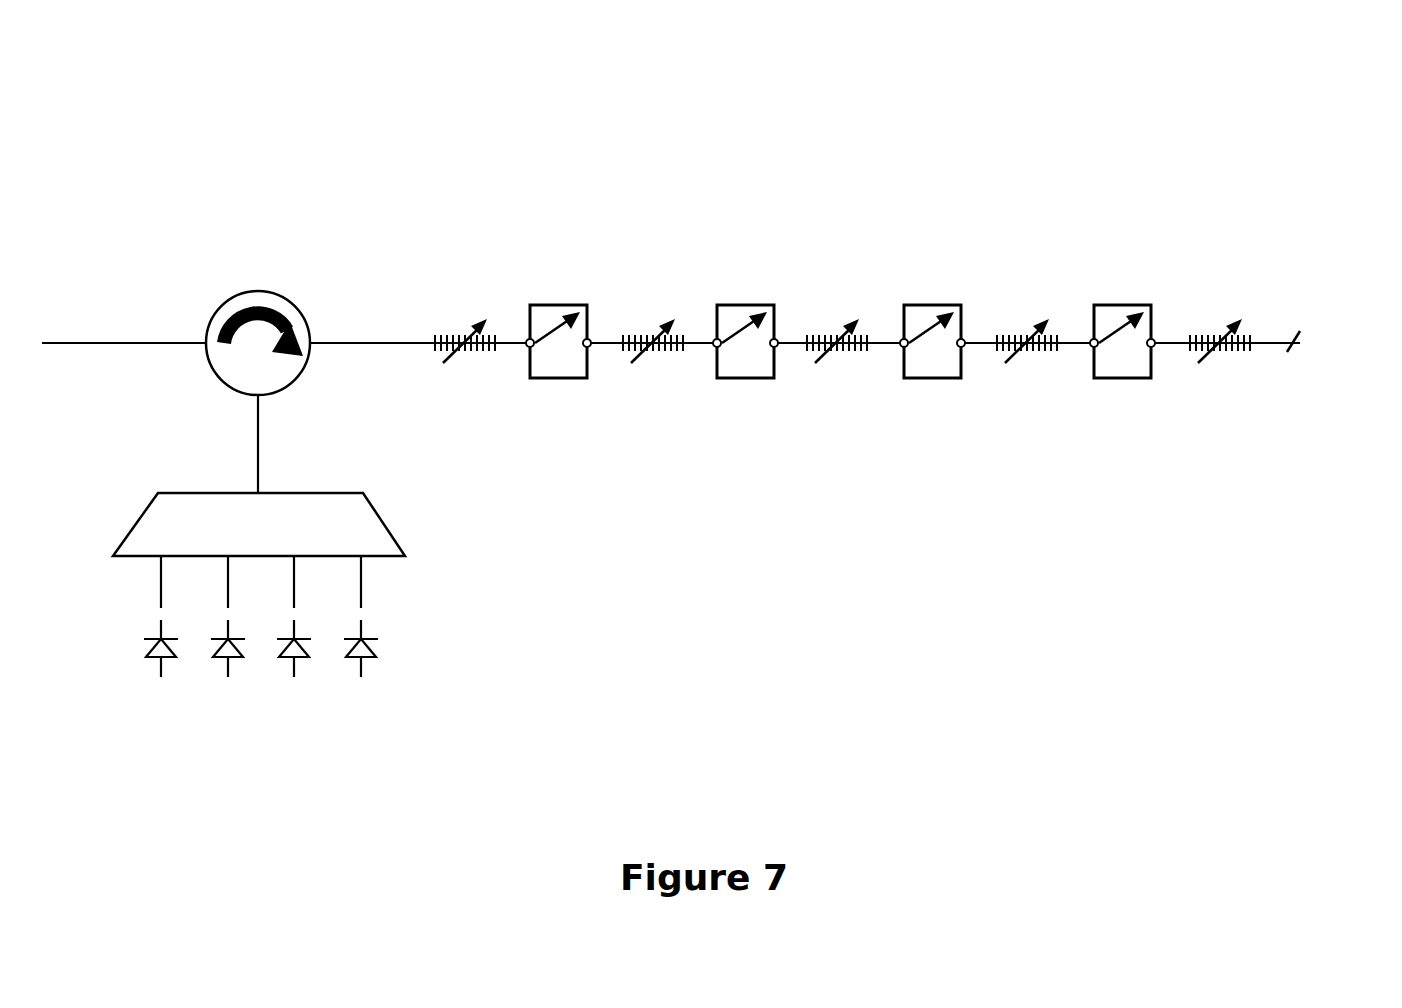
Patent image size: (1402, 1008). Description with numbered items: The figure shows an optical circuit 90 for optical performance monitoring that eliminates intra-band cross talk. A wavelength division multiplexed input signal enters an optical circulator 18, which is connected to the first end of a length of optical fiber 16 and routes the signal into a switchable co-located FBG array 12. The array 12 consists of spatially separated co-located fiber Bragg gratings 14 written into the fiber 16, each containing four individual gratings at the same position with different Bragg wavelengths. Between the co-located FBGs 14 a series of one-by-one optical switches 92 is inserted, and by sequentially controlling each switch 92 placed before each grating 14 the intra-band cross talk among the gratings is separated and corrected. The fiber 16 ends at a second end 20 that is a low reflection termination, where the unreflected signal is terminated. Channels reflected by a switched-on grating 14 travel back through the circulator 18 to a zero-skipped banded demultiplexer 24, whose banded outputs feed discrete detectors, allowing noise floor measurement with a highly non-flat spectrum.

The optical circuit 90 is at (947, 61).
The optical circulator 18 is at (312, 330).
The optical fiber 16 is at (369, 349).
The switchable co-located FBG array 12 is at (1255, 383).
The co-located fiber Bragg grating 14 is at (481, 356).
The 1×1 optical switch 92 is at (540, 300).
The second end 20 is at (1306, 340).
The banded demultiplexer 24 is at (128, 511).